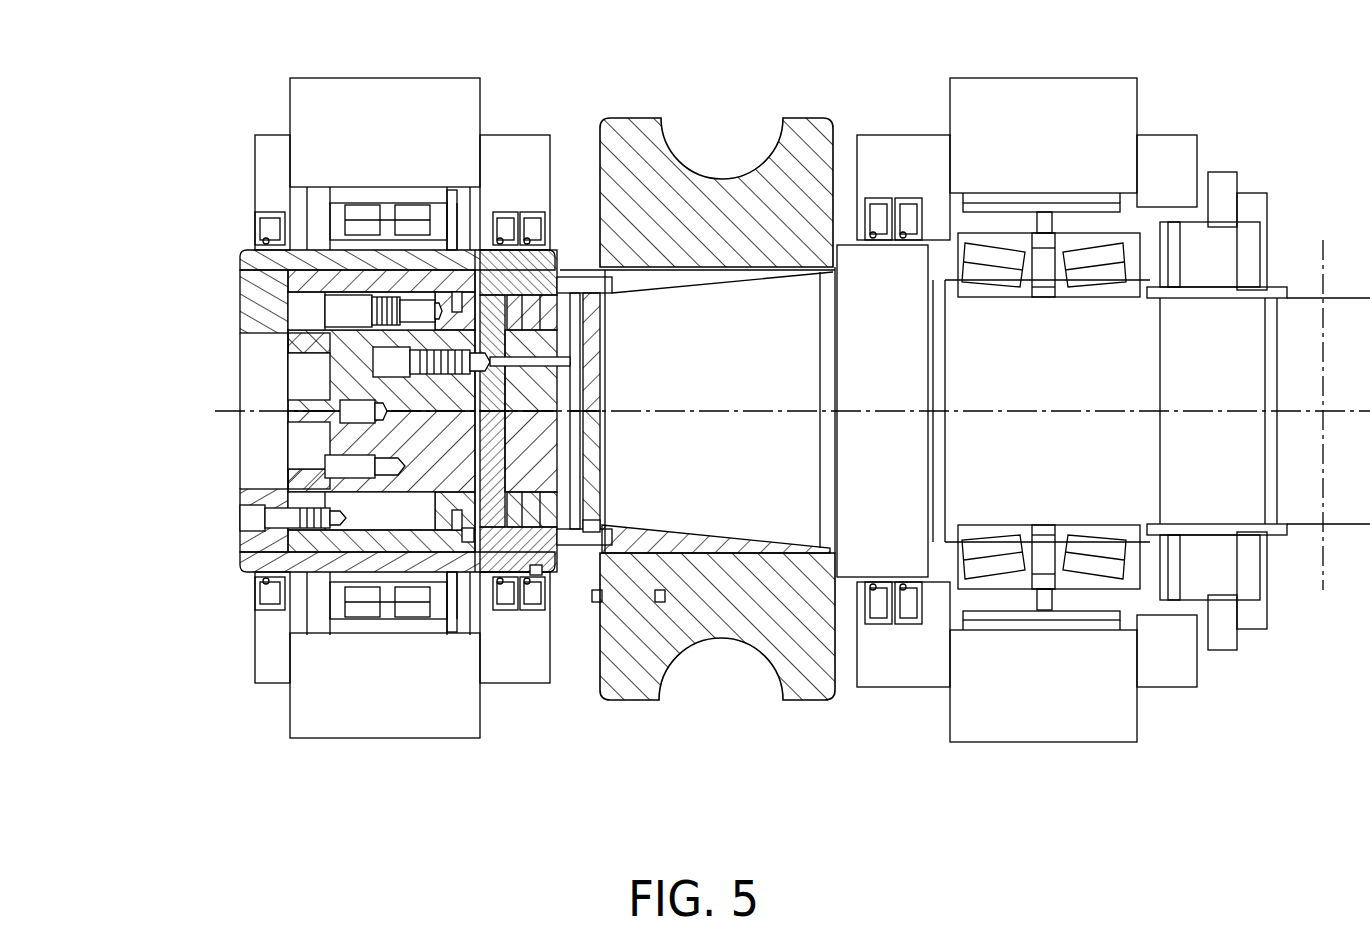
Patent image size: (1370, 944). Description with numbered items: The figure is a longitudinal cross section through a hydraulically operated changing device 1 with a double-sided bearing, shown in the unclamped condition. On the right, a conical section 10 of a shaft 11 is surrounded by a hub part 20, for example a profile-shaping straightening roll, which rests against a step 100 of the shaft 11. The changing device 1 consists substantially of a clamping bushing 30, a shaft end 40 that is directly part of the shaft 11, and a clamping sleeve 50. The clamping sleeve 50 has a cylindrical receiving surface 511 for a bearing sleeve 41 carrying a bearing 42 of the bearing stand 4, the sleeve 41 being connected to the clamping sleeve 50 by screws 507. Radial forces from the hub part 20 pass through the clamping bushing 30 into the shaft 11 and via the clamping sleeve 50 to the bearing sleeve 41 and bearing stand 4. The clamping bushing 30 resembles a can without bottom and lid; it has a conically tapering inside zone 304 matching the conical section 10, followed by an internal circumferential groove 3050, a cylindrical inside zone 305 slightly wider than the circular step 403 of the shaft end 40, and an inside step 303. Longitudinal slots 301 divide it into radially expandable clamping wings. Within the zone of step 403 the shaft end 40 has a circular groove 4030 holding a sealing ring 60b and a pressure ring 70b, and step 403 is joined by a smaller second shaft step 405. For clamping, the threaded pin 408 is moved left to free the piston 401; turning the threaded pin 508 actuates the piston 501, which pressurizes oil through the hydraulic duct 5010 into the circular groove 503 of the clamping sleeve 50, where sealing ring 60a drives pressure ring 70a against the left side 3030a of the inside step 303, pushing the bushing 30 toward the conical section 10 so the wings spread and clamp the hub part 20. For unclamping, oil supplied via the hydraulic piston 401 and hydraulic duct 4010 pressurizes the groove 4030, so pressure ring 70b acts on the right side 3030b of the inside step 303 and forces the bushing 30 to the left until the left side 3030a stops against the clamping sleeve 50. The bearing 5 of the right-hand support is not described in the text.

The changing device 1 is at (203, 366).
The bearing stand 4 is at (385, 105).
The bearing 5 is at (995, 290).
The conical section of shaft 10 is at (733, 325).
The shaft 11 is at (1215, 322).
The hub part 20 is at (630, 175).
The clamping bushing 30 is at (780, 600).
The shaft end 40 is at (330, 573).
The bearing sleeve 41 is at (375, 232).
The bearing 42 is at (387, 193).
The clamping sleeve 50 is at (425, 470).
The step of shaft 100 is at (836, 232).
The longitudinal slots 301 is at (663, 277).
The inside step 303 is at (488, 555).
The conical inside zone 304 is at (665, 527).
The cylindrical inside zone 305 is at (590, 358).
The hydraulic piston 401 is at (500, 378).
The circular step 403 is at (498, 318).
The second shaft step 405 is at (480, 300).
The threaded pin 408 is at (392, 362).
The piston 501 is at (305, 292).
The circular groove 503 is at (392, 556).
The screws 507 is at (342, 522).
The threaded pin 508 is at (300, 320).
The cylindrical receiving surface 511 is at (432, 262).
The left side of inside step 3030a is at (455, 525).
The right side of inside step 3030b is at (536, 578).
The internal circumferential groove 3050 is at (598, 525).
The hydraulic duct 4010 is at (340, 422).
The circular groove 4030 is at (562, 278).
The hydraulic duct 5010 is at (398, 302).
The sealing ring 60a is at (456, 522).
The sealing ring 60b is at (660, 600).
The pressure ring 70a is at (470, 540).
The pressure ring 70b is at (598, 600).